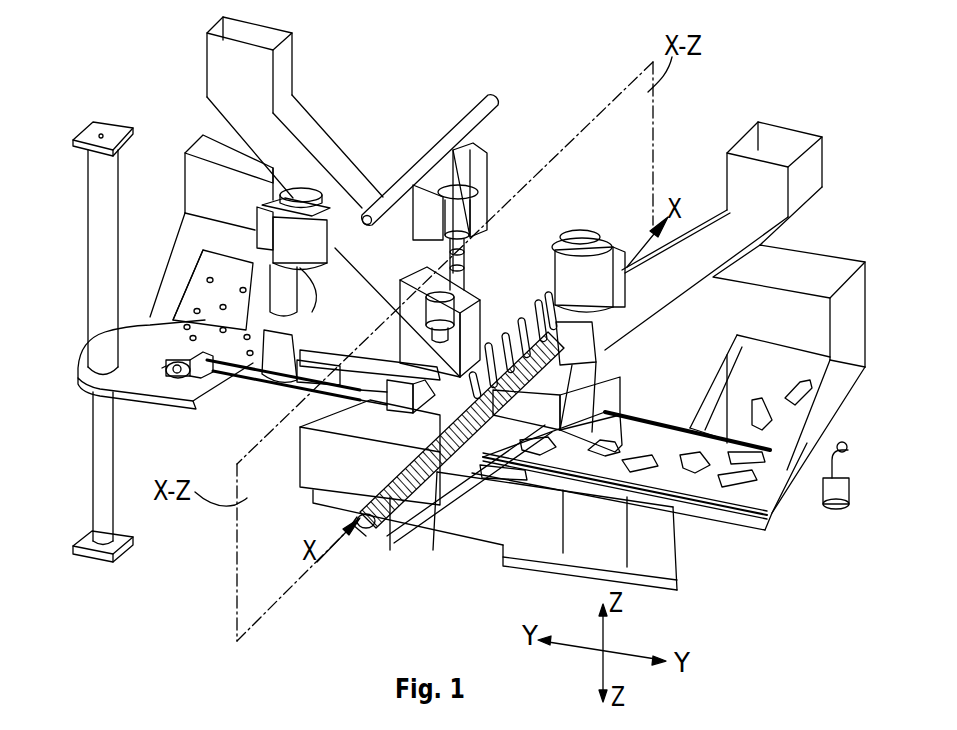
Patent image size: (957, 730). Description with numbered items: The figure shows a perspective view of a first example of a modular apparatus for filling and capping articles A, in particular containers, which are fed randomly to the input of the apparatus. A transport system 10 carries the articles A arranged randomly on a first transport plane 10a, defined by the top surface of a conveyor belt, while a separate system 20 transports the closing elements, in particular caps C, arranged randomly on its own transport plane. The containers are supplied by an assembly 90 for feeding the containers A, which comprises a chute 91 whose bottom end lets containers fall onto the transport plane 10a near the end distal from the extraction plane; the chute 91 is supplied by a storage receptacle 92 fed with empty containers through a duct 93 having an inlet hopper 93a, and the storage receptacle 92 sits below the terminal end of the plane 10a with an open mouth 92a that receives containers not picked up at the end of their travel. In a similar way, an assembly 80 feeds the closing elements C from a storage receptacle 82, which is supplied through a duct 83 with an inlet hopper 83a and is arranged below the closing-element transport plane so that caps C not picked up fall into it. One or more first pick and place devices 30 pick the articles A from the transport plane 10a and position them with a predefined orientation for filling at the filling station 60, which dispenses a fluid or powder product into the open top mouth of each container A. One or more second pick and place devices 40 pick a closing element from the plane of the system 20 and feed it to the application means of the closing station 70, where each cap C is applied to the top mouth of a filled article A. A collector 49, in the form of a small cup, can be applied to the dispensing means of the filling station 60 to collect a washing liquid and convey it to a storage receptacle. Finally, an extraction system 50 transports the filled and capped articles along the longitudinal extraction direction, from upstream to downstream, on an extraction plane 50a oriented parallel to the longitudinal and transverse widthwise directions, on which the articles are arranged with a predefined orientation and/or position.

The transport system 10 is at (653, 536).
The first transport plane 10a is at (687, 480).
The system for transporting closing elements 20 is at (224, 407).
The first pick and place devices 30 is at (629, 210).
The second pick and place devices 40 is at (263, 357).
The collector 49 is at (163, 358).
The extraction system 50 is at (345, 575).
The extraction plane 50a is at (418, 508).
The filling station 60 is at (374, 352).
The closing station 70 is at (495, 247).
The assembly for feeding closing elements 80 is at (196, 218).
The storage receptacle 82 is at (312, 457).
The duct 83 is at (235, 72).
The inlet hopper 83a is at (247, 30).
The assembly for feeding the containers 90 is at (781, 313).
The chute 91 is at (790, 375).
The storage receptacle 92 is at (507, 512).
The open mouth 92a is at (431, 472).
The duct 93 is at (740, 183).
The inlet hopper 93a is at (777, 148).
The articles A is at (772, 470).
The caps C is at (222, 330).